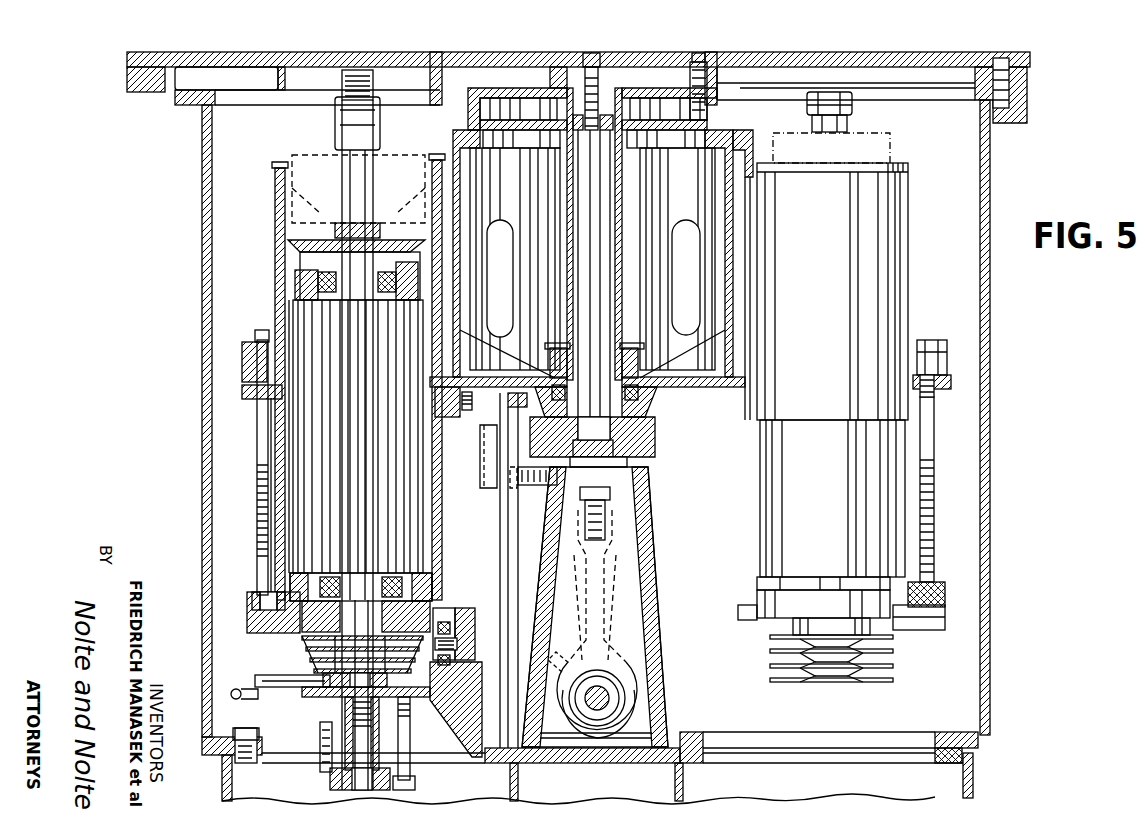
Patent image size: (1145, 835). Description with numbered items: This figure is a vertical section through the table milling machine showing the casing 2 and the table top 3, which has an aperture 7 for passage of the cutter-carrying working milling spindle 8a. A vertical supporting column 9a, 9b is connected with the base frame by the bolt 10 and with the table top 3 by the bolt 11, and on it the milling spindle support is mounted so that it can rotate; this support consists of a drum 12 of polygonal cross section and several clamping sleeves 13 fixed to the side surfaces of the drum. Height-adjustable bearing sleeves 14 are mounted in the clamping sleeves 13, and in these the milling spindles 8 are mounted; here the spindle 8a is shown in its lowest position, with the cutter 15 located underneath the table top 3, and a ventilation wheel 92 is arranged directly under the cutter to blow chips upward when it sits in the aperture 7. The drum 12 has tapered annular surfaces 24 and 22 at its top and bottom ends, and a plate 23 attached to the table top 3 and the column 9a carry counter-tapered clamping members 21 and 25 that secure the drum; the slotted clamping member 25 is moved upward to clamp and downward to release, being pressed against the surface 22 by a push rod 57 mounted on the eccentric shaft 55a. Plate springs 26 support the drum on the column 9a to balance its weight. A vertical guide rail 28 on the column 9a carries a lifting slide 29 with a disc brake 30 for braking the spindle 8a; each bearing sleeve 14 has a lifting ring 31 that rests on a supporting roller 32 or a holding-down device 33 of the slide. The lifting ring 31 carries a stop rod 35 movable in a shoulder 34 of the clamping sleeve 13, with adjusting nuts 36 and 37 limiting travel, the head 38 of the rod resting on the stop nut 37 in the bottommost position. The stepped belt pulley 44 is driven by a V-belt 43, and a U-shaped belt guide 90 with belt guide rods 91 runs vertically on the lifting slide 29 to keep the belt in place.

The casing 2 is at (990, 418).
The table top 3 is at (918, 56).
The aperture 7 is at (283, 81).
The milling spindle 8 is at (380, 136).
The working milling spindle 8a is at (368, 98).
The supporting column 9a is at (650, 612).
The supporting column 9b is at (622, 220).
The bolt 10 is at (690, 733).
The bolt 11 is at (594, 53).
The drum 12 is at (735, 295).
The clamping sleeve 13 is at (275, 202).
The bearing sleeve 14 is at (305, 510).
The cutter 15 is at (306, 172).
The clamping member 21 is at (720, 132).
The tapered annular surface 22 is at (652, 412).
The plate 23 is at (655, 90).
The tapered annular surface 24 is at (470, 128).
The clamping member 25 is at (657, 445).
The plate springs 26 is at (629, 348).
The vertical guide rail 28 is at (482, 462).
The lifting slide 29 is at (454, 738).
The disc brake 30 is at (325, 697).
The lifting ring 31 is at (247, 620).
The supporting roller 32 is at (442, 606).
The holding-down device 33 is at (432, 585).
The shoulder 34 is at (242, 368).
The stop rod 35 is at (257, 470).
The adjusting nut 36 is at (254, 590).
The stop nut 37 is at (242, 392).
The head of the stop rod 38 is at (262, 330).
The V-belt 43 is at (275, 688).
The belt pulley 44 is at (310, 665).
The eccentric shaft 55a is at (610, 695).
The push rod 57 is at (608, 585).
The belt guide 90 is at (410, 715).
The belt guide rods 91 is at (238, 688).
The ventilation wheel 92 is at (300, 252).